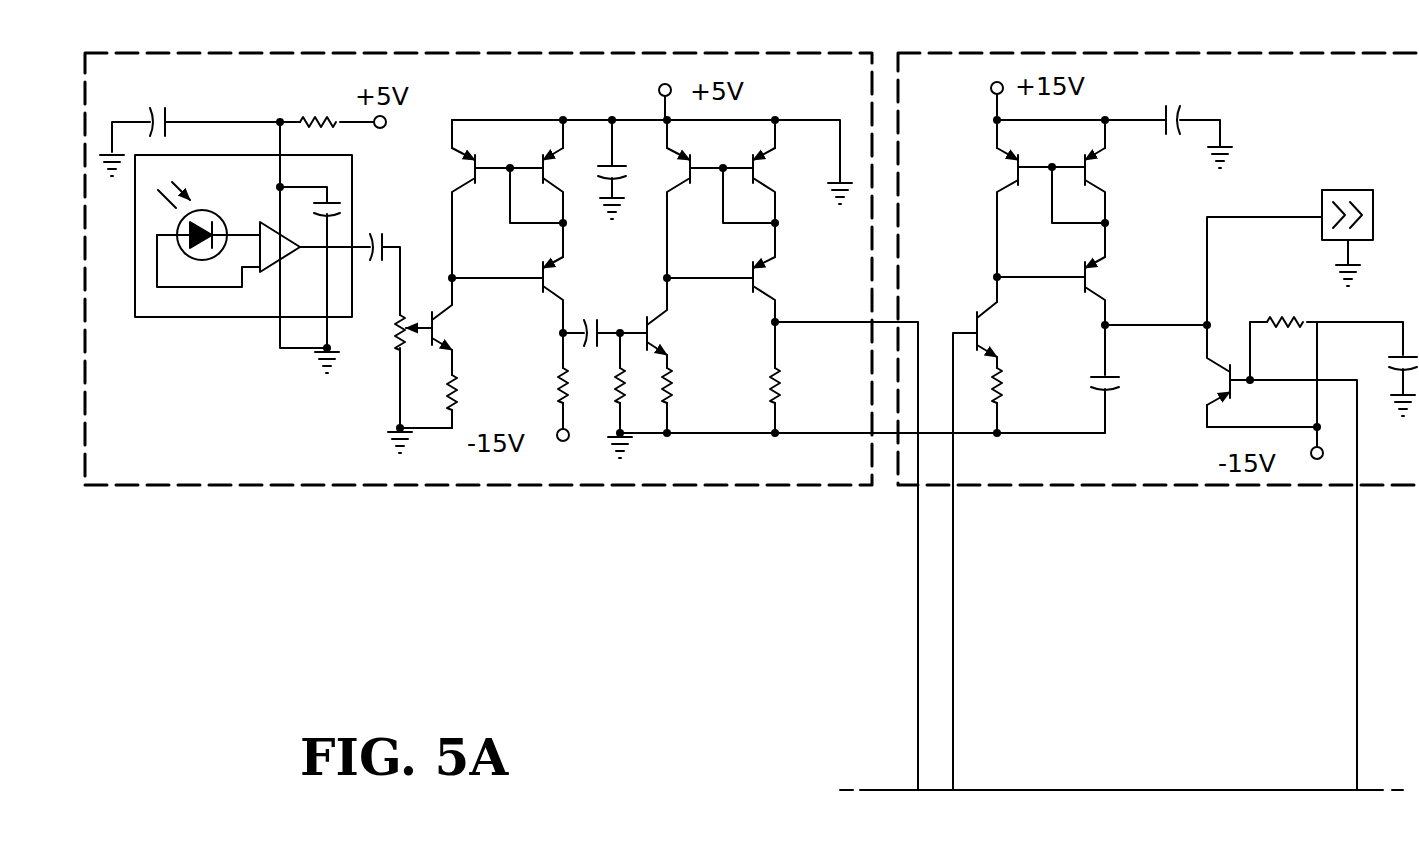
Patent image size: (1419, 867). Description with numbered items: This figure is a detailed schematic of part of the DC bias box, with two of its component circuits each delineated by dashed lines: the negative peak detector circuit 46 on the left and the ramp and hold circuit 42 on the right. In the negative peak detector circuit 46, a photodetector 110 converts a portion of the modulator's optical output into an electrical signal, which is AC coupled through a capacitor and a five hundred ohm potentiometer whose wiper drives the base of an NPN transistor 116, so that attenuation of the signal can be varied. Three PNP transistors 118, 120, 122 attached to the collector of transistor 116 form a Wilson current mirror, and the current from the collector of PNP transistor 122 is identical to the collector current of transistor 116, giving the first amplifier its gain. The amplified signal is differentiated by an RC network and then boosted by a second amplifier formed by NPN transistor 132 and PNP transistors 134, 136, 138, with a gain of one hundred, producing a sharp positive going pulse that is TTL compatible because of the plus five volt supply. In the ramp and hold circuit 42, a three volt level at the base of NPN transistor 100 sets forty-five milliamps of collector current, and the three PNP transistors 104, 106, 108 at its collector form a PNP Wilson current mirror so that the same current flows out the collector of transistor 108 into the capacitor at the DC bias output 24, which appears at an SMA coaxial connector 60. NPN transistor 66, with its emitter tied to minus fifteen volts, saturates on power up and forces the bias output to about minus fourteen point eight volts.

The DC bias output 24 is at (1243, 216).
The ramp and hold circuit 42 is at (1357, 110).
The negative peak detector circuit 46 is at (255, 439).
The SMA coaxial connector 60 is at (1345, 190).
The NPN transistor 66 is at (1204, 387).
The NPN transistor 100 is at (970, 306).
The PNP transistor 104 is at (996, 161).
The PNP transistor 106 is at (1109, 171).
The PNP transistor 108 is at (1104, 283).
The photodetector 110 is at (352, 190).
The NPN transistor 116 is at (458, 326).
The PNP transistor 118 is at (450, 174).
The PNP transistor 120 is at (538, 134).
The PNP transistor 122 is at (566, 281).
The NPN transistor 132 is at (674, 327).
The PNP transistor 134 is at (653, 146).
The PNP transistor 136 is at (769, 173).
The PNP transistor 138 is at (769, 283).